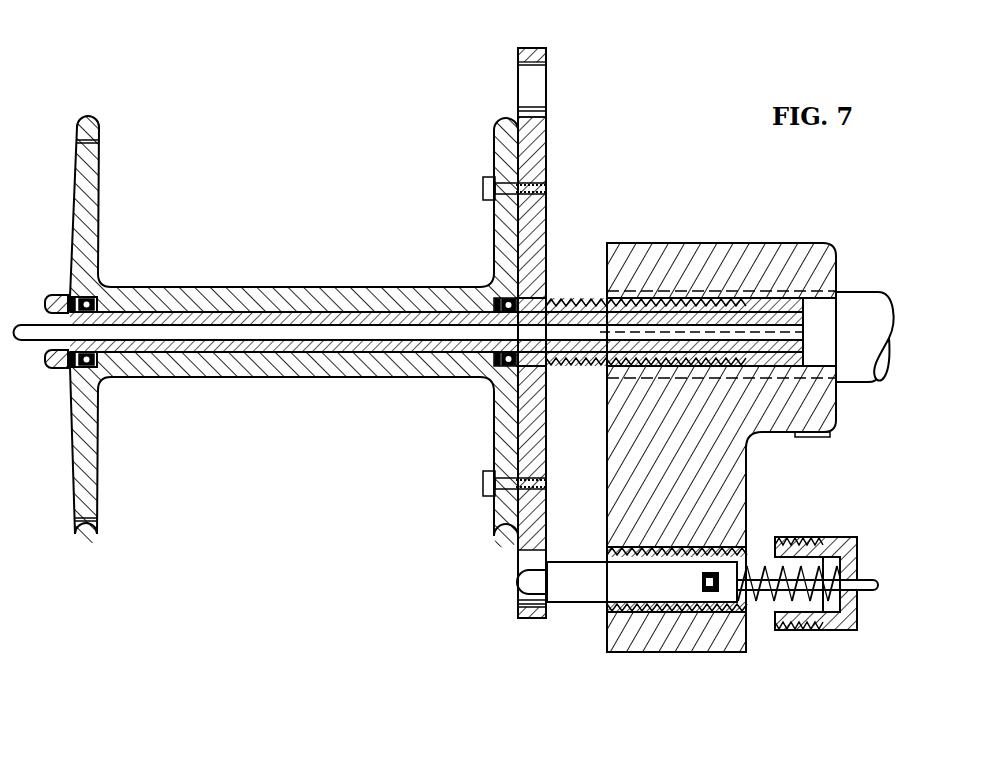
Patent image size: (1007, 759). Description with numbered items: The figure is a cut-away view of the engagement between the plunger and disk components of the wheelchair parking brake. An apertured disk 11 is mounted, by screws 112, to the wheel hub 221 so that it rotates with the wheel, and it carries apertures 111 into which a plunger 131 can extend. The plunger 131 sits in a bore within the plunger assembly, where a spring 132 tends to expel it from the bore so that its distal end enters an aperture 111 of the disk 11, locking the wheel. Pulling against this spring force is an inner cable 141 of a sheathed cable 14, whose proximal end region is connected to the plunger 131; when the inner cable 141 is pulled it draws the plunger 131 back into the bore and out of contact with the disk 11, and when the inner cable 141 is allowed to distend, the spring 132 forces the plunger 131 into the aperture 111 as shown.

The apertured disk 11 is at (568, 333).
The aperture 111 is at (548, 72).
The screw 112 is at (484, 183).
The wheel hub 221 is at (493, 237).
The plunger 131 is at (568, 604).
The inner cable 141 is at (683, 614).
The spring 132 is at (759, 625).
The sheathed cable 14 is at (866, 582).